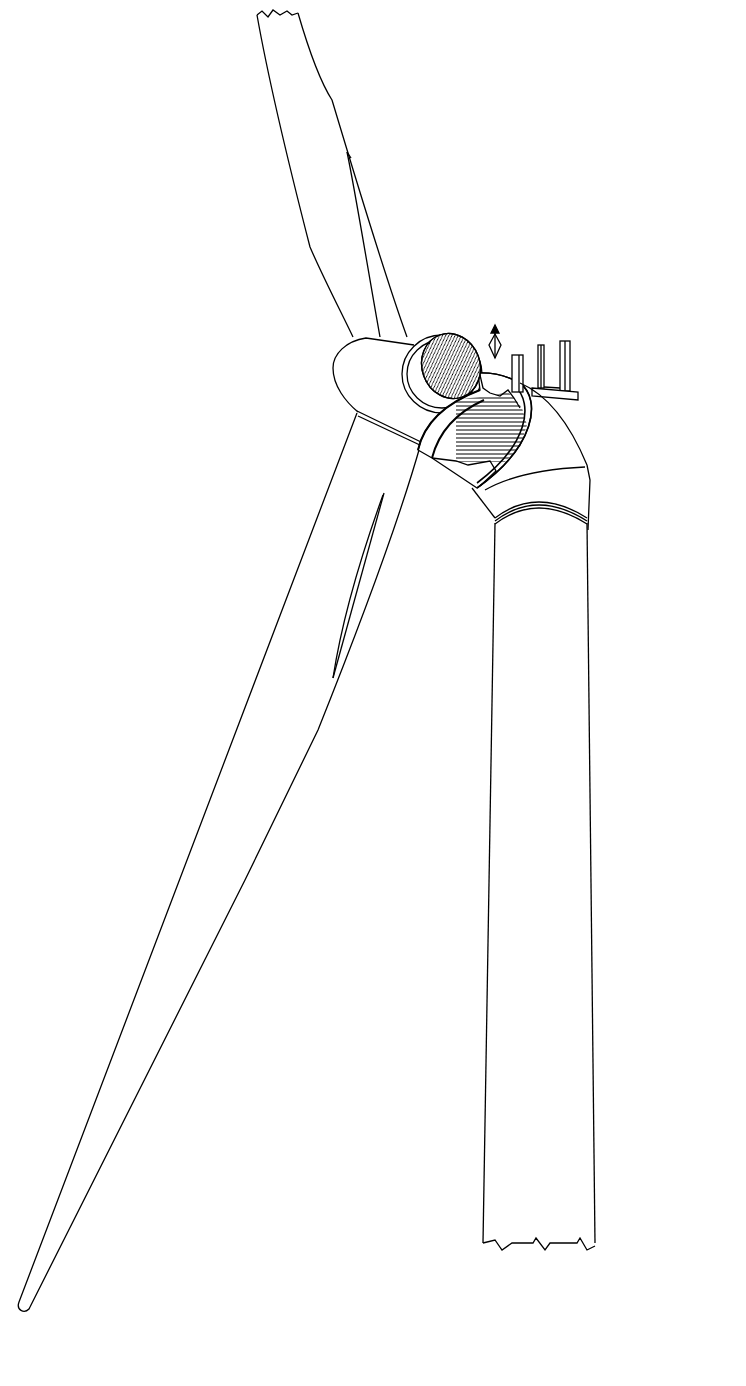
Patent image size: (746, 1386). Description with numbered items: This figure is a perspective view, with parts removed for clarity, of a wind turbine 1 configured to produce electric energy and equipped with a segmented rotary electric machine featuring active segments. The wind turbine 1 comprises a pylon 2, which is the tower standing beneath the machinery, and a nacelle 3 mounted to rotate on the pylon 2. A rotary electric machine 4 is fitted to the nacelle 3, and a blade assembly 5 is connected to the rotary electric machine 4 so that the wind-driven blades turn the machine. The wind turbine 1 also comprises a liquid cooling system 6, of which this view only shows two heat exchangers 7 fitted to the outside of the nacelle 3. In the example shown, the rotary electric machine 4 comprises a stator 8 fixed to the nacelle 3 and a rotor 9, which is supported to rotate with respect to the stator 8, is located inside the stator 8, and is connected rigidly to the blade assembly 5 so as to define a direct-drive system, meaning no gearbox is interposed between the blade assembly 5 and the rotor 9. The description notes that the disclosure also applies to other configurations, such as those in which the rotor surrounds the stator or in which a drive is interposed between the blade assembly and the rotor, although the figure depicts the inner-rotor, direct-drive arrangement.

The wind turbine 1 is at (558, 238).
The pylon 2 is at (598, 749).
The nacelle 3 is at (596, 441).
The rotary electric machine 4 is at (446, 482).
The blade assembly 5 is at (289, 382).
The liquid cooling system 6 is at (593, 338).
The heat exchangers 7 is at (498, 356).
The stator 8 is at (483, 368).
The rotor 9 is at (522, 456).